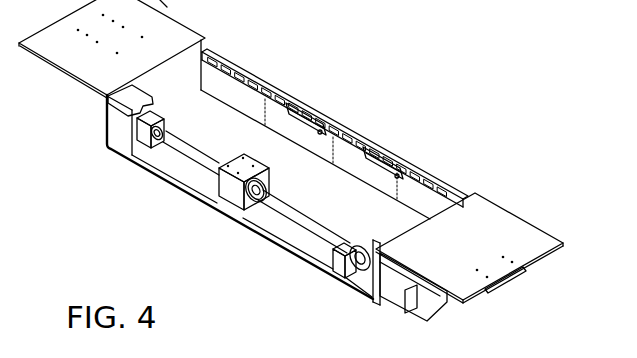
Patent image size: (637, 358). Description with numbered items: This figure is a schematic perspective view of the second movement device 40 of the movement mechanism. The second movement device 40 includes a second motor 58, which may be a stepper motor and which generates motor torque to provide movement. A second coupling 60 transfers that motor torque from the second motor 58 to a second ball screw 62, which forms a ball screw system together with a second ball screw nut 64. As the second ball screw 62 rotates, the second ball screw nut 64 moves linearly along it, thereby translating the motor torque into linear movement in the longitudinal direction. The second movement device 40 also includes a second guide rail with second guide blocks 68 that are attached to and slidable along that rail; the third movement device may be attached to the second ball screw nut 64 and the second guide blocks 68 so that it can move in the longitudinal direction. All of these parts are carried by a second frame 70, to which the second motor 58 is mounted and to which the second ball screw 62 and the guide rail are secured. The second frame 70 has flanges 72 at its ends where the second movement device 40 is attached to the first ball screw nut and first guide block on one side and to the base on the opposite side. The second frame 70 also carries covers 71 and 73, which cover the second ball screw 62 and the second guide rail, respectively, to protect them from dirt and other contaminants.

The second movement device 40 is at (416, 103).
The second motor 58 is at (430, 313).
The second coupling 60 is at (360, 272).
The second ball screw 62 is at (287, 217).
The second ball screw nut 64 is at (215, 193).
The second guide blocks 68 is at (293, 111).
The second frame 70 is at (155, 177).
The cover 71 is at (107, 128).
The flanges 72 is at (502, 205).
The cover 73 is at (229, 62).